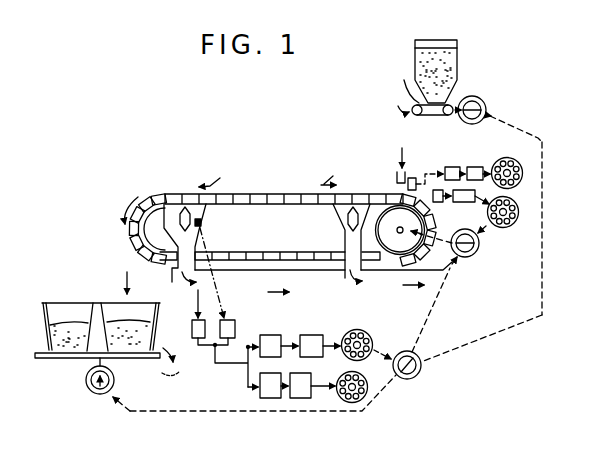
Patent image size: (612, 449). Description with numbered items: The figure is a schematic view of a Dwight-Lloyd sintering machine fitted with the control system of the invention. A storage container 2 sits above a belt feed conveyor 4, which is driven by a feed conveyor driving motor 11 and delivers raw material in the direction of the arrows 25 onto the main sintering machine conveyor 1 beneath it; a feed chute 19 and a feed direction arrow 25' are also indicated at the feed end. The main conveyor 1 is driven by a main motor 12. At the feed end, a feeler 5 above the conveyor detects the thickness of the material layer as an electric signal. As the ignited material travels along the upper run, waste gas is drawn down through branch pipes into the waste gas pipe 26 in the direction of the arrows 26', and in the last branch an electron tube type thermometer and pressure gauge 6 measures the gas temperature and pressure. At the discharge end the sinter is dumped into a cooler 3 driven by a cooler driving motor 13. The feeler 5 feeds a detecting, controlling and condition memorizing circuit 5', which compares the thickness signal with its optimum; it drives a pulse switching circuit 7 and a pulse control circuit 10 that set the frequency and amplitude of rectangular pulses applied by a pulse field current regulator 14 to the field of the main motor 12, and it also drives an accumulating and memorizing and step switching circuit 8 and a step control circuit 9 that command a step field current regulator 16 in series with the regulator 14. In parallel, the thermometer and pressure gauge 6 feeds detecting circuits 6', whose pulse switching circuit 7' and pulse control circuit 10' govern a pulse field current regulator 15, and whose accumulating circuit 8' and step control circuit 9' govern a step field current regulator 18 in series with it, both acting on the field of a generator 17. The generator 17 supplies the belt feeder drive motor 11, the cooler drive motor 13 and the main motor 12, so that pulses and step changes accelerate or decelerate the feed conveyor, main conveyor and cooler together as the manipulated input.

The main sintering machine conveyor 1 is at (356, 200).
The storage container 2 is at (453, 68).
The cooler 3 is at (71, 304).
The belt feed conveyor 4 is at (438, 112).
The feeler 5 is at (386, 172).
The detecting, controlling and condition memorizing circuit 5' is at (425, 174).
The electron tube type thermometer and pressure gauge 6 is at (213, 266).
The detecting, controlling and condition memorizing circuit 6' is at (216, 338).
The pulse switching circuit 7 is at (442, 208).
The pulse switching circuit 7' is at (274, 377).
The accumulating and memorizing and step switching circuit 8 is at (454, 162).
The accumulating and memorizing and step switching circuit 8' is at (279, 334).
The step control circuit 9 is at (478, 162).
The step control circuit 9' is at (320, 334).
The pulse control circuit 10 is at (471, 208).
The pulse control circuit 10' is at (312, 377).
The feed conveyor driving motor 11 is at (486, 104).
The main motor 12 is at (476, 246).
The cooler driving motor 13 is at (99, 395).
The pulse field current regulator 14 is at (511, 225).
The pulse field current regulator 15 is at (340, 396).
The step field current regulator 16 is at (511, 159).
The generator 17 is at (421, 372).
The step field current regulator 18 is at (373, 338).
The feed chute 19 is at (404, 84).
The arrows 25 is at (267, 176).
The direction of feed 25' is at (394, 102).
The waste gas pipe 26 is at (268, 288).
The arrows 26' is at (323, 278).